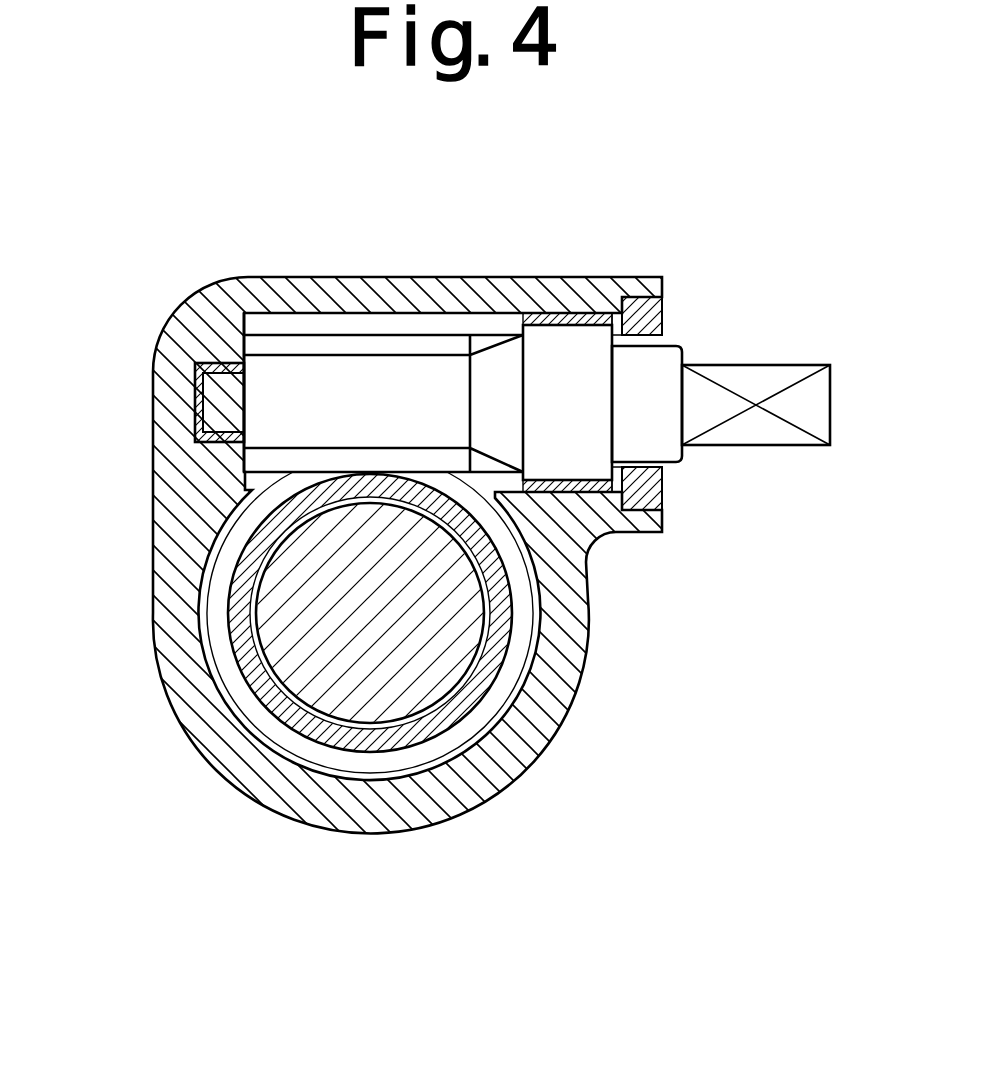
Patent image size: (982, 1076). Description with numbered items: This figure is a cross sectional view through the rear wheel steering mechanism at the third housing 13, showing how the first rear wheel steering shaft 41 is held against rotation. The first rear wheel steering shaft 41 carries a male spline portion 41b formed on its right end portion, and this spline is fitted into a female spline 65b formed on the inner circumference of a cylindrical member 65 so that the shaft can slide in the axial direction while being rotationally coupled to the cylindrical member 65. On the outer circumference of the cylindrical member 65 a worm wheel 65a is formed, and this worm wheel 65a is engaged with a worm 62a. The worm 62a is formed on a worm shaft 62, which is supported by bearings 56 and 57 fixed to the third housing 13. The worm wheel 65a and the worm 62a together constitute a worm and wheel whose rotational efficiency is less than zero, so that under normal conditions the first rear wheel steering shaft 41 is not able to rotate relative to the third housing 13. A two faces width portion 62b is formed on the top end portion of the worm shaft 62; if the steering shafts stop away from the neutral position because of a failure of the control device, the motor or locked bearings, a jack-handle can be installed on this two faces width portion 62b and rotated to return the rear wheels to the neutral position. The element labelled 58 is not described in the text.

The third housing 13 is at (520, 747).
The first rear wheel steering shaft 41 is at (405, 695).
The male spline portion 41b is at (323, 717).
The bearing 56 is at (215, 366).
The bearing 57 is at (563, 320).
The nut 58 is at (663, 312).
The worm shaft 62 is at (493, 357).
The worm 62a is at (323, 352).
The two faces width portion 62b is at (773, 368).
The cylindrical member 65 is at (277, 722).
The worm wheel 65a is at (237, 688).
The female spline 65b is at (370, 707).